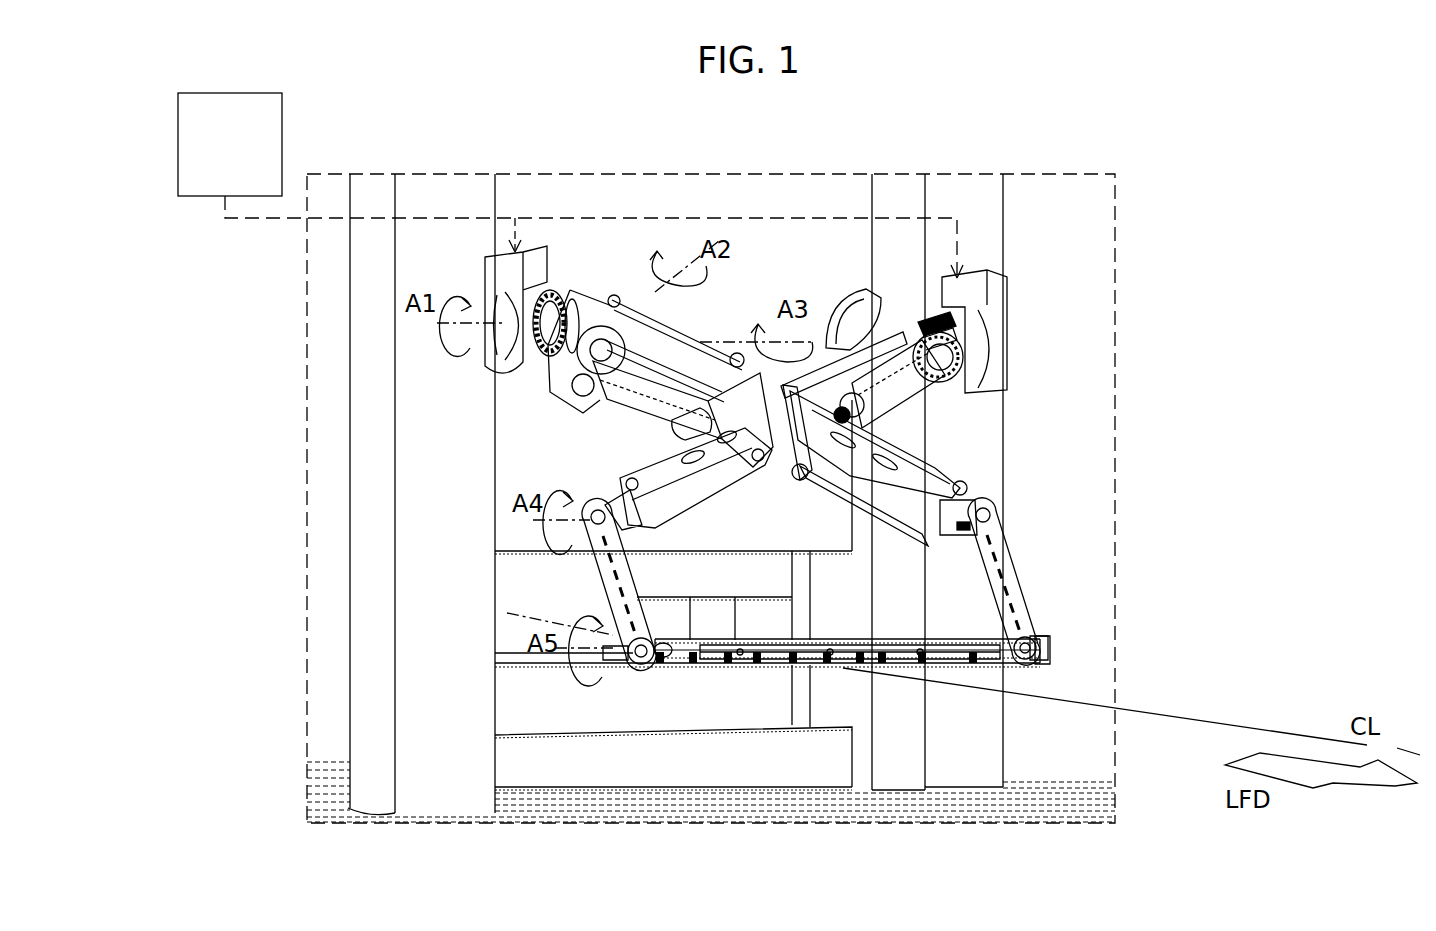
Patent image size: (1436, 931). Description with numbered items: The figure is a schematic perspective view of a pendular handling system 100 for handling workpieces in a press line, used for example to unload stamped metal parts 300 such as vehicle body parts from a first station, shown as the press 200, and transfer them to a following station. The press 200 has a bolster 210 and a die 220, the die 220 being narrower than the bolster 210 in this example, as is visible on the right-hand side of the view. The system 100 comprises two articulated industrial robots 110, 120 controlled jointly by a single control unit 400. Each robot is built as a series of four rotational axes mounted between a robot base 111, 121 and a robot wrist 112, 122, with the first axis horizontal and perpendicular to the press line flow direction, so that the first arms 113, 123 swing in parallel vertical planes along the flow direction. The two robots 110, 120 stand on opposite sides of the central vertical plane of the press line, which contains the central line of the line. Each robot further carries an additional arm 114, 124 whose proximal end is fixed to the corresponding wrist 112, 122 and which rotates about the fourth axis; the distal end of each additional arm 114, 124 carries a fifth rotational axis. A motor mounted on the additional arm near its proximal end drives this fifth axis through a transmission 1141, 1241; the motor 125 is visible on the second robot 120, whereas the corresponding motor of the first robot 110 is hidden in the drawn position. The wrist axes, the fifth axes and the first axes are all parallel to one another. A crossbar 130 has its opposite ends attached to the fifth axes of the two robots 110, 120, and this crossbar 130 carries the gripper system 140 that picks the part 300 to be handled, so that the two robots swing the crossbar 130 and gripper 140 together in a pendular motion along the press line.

The pendular handling system 100 is at (844, 251).
The articulated industrial robot 110 is at (522, 406).
The robot base 111 is at (500, 273).
The robot wrist 112 is at (600, 497).
The first arm 113 is at (573, 312).
The additional arm 114 is at (602, 565).
The transmission 1141 is at (595, 557).
The articulated industrial robot 120 is at (987, 393).
The robot base 121 is at (993, 293).
The robot wrist 122 is at (980, 520).
The first arm 123 is at (1003, 350).
The additional arm 124 is at (998, 552).
The transmission 1241 is at (1000, 563).
The motor 125 is at (997, 498).
The crossbar 130 is at (950, 638).
The gripper system 140 is at (1047, 638).
The press 200 is at (428, 706).
The bolster 210 is at (540, 770).
The die 220 is at (540, 688).
The part 300 is at (850, 667).
The control unit 400 is at (205, 147).